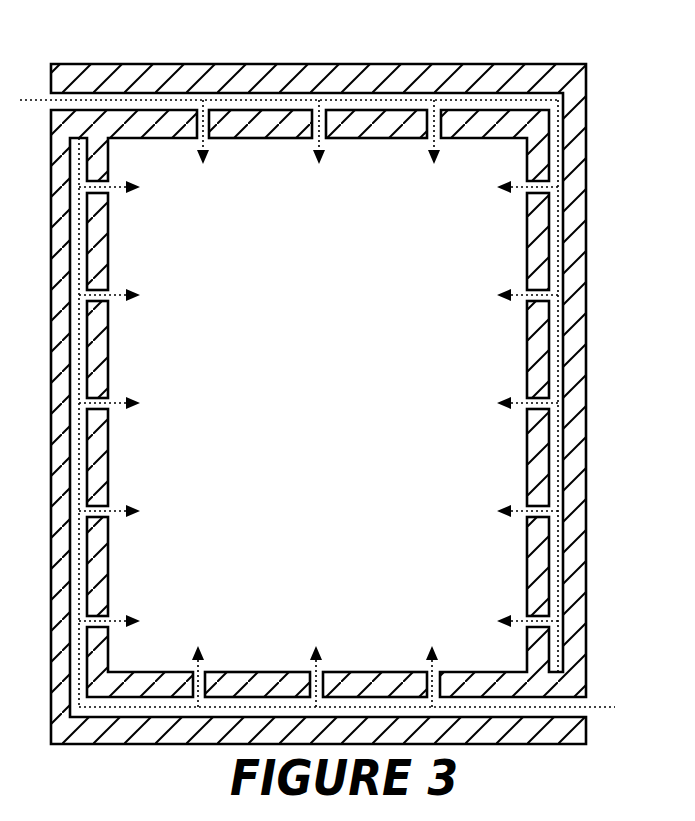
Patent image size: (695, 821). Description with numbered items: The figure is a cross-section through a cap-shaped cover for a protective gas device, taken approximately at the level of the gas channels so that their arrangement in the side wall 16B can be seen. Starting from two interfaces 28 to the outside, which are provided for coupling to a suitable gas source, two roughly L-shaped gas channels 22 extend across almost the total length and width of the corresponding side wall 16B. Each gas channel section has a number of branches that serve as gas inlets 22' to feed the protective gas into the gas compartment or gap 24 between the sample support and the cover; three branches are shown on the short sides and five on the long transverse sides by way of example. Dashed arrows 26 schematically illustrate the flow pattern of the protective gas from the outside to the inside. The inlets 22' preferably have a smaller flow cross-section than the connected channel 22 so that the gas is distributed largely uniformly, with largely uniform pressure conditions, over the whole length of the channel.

The side wall 16B is at (497, 86).
The gas channel 22 is at (318, 363).
The gas inlet 22' is at (513, 404).
The gas compartment 24 is at (317, 405).
The dashed arrows 26 is at (110, 404).
The interface 28 is at (319, 403).